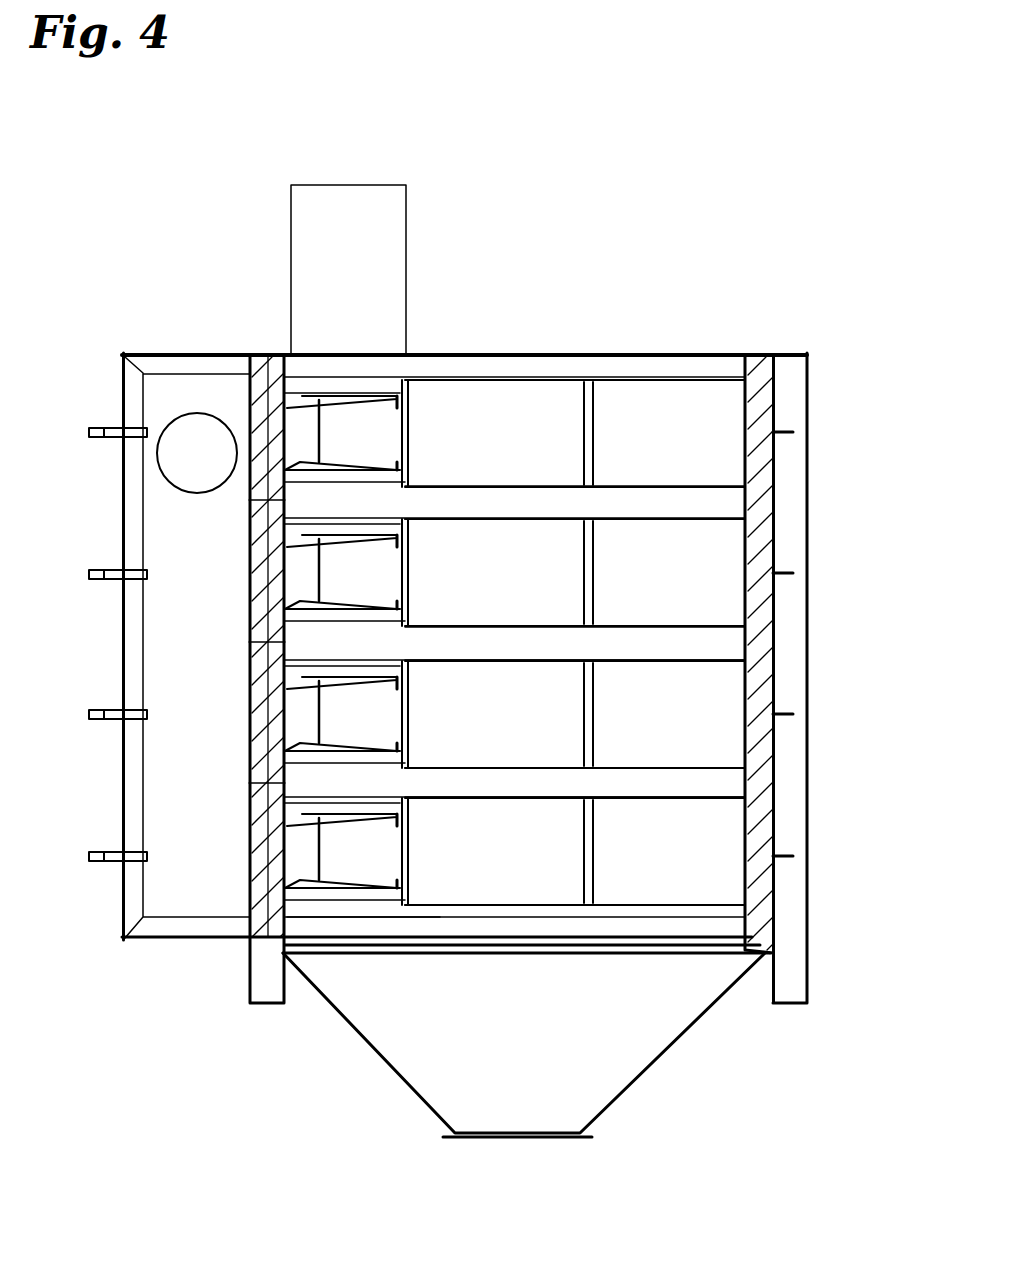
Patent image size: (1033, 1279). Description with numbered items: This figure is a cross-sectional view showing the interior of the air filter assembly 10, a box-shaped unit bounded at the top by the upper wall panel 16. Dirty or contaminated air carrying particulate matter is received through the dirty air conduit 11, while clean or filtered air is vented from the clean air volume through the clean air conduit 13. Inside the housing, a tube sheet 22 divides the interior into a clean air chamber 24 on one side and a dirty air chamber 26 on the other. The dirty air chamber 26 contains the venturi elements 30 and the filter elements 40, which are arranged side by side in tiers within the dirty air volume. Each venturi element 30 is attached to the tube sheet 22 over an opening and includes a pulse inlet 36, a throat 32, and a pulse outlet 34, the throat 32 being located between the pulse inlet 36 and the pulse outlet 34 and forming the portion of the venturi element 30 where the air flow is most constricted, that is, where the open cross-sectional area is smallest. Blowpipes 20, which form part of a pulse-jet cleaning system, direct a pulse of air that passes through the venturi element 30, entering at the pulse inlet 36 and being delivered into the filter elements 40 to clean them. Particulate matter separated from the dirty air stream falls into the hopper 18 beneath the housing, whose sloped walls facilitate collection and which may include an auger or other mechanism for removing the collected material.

The air filter assembly 10 is at (645, 153).
The dirty air conduit 11 is at (406, 220).
The clean air conduit 13 is at (172, 425).
The upper wall panel 16 is at (655, 352).
The hopper 18 is at (615, 1073).
The blowpipes 20 is at (93, 427).
The tube sheet 22 is at (307, 393).
The clean air chamber 24 is at (181, 550).
The dirty air chamber 26 is at (678, 500).
The venturi elements 30 is at (363, 627).
The throat 32 is at (318, 413).
The pulse outlet 34 is at (372, 413).
The pulse inlet 36 is at (293, 440).
The filter elements 40 is at (707, 435).